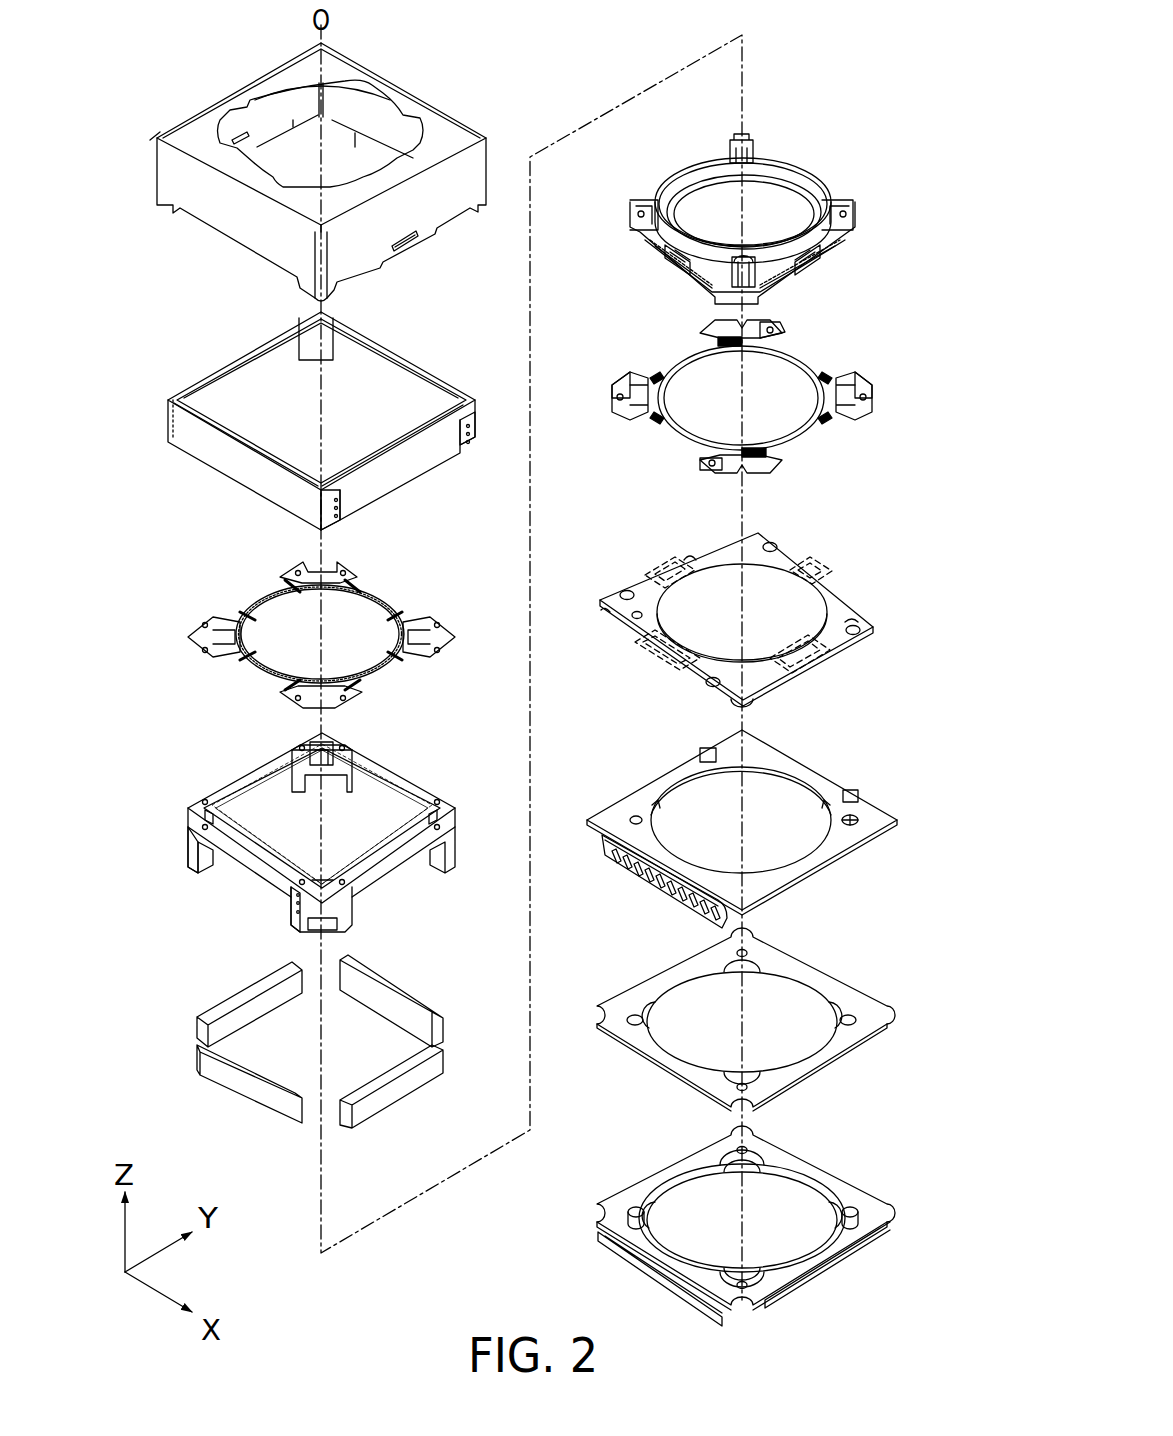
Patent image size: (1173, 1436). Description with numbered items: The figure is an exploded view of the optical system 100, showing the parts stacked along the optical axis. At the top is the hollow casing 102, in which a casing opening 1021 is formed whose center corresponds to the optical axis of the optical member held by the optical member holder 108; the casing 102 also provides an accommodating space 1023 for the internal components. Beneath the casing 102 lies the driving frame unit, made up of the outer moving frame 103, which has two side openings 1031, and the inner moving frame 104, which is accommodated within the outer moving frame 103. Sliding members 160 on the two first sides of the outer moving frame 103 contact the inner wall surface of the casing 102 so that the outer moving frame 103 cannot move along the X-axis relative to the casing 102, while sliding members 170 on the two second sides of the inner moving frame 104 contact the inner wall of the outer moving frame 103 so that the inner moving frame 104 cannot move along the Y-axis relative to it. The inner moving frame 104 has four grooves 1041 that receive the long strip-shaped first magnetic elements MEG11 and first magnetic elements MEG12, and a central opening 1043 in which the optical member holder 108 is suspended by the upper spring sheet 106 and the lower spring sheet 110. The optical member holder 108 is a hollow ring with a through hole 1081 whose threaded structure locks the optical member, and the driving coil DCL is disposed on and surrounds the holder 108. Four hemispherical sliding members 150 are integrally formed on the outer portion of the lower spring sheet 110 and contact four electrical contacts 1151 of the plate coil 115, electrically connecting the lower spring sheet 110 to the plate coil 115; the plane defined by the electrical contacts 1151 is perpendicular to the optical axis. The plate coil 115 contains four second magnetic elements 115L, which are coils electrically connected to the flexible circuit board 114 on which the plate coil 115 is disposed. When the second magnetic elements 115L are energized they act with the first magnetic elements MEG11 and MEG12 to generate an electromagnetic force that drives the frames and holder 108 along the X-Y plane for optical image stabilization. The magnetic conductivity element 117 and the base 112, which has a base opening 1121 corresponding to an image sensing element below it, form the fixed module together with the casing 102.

The optical system 100 is at (137, 26).
The casing 102 is at (363, 56).
The casing opening 1021 is at (385, 102).
The accommodating space 1023 is at (312, 142).
The outer moving frame 103 is at (400, 340).
The side opening 1031 is at (232, 388).
The sliding member 160 is at (477, 430).
The upper spring sheet 106 is at (400, 593).
The inner moving frame 104 is at (415, 773).
The groove 1041 is at (266, 826).
The central opening 1043 is at (270, 800).
The sliding member 170 is at (192, 846).
The first magnetic element MEG11 is at (248, 988).
The first magnetic element MEG12 is at (385, 980).
The optical member holder 108 is at (820, 215).
The through hole 1081 is at (778, 178).
The driving coil DCL is at (826, 263).
The sliding member 150 is at (776, 330).
The lower spring sheet 110 is at (821, 356).
The plate coil 115 is at (725, 546).
The electrical contact 1151 is at (772, 547).
The second magnetic element 115L is at (665, 582).
The circuit board 114 is at (846, 777).
The magnetic conductivity element 117 is at (846, 982).
The base 112 is at (846, 1178).
The base opening 1121 is at (710, 1173).